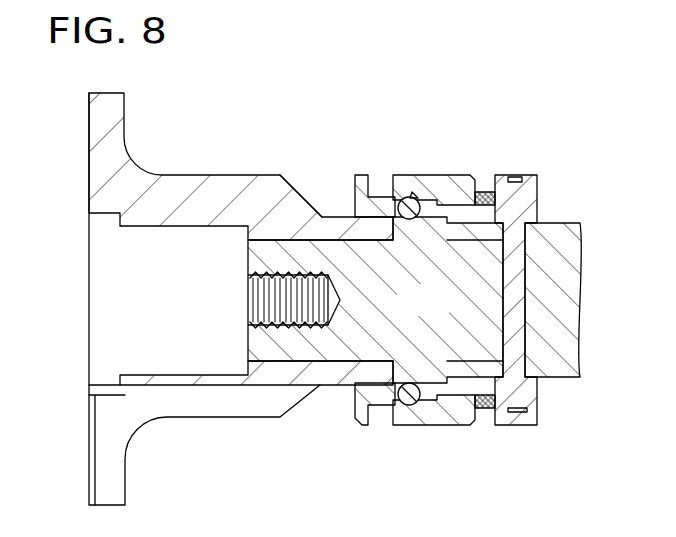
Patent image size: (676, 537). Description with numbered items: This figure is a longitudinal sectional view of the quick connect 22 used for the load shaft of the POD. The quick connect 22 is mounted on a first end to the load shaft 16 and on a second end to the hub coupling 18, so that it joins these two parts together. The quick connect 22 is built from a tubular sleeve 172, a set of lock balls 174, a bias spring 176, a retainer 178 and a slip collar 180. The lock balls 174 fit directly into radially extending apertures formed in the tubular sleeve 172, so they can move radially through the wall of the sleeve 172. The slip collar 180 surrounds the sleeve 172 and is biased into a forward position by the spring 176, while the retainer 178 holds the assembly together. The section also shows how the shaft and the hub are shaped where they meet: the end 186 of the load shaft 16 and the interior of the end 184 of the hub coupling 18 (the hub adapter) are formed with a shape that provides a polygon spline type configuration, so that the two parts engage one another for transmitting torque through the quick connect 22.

The load shaft 16 is at (560, 223).
The hub coupling 18 is at (89, 427).
The quick connect 22 is at (507, 128).
The tubular sleeve 172 is at (383, 408).
The lock balls 174 is at (407, 408).
The bias spring 176 is at (481, 410).
The retainer 178 is at (537, 410).
The slip collar 180 is at (410, 175).
The end of the hub adapter 184 is at (376, 236).
The end of the load shaft 186 is at (447, 314).